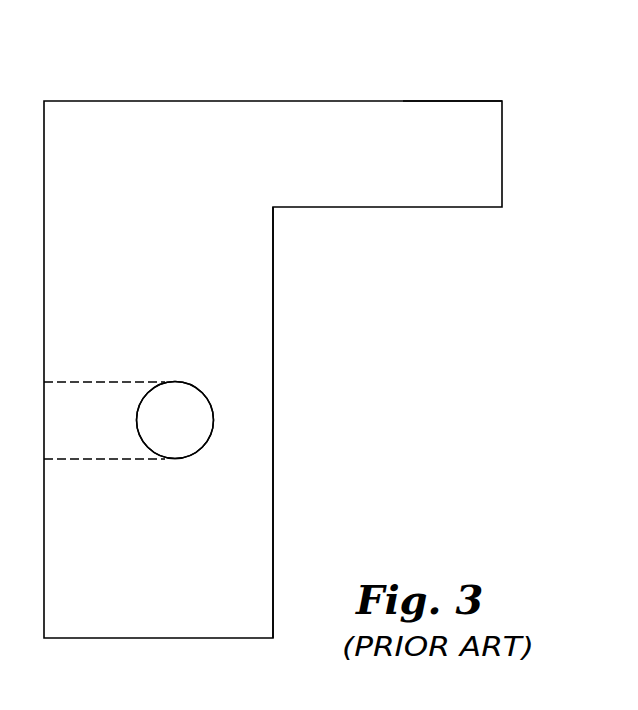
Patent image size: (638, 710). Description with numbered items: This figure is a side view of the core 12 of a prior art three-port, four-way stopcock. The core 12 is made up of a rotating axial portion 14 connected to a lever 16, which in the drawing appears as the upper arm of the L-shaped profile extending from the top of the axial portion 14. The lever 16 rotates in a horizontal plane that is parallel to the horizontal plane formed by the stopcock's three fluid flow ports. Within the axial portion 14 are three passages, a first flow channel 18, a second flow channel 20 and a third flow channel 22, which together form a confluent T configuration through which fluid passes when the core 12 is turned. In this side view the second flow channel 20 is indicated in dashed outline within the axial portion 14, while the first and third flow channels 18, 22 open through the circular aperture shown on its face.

The core 12 is at (143, 92).
The axial portion 14 is at (273, 450).
The lever 16 is at (403, 99).
The first flow channel 18 is at (203, 413).
The second flow channel 20 is at (107, 431).
The third flow channel 22 is at (175, 420).